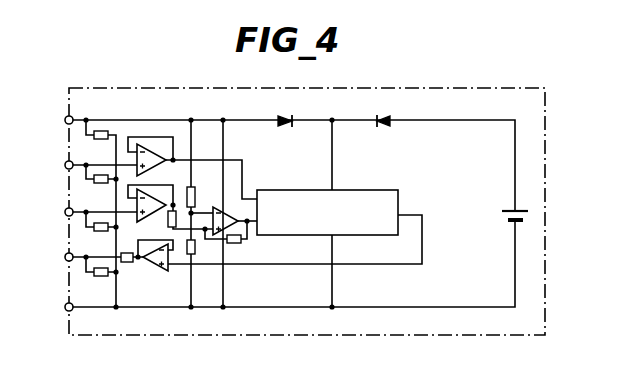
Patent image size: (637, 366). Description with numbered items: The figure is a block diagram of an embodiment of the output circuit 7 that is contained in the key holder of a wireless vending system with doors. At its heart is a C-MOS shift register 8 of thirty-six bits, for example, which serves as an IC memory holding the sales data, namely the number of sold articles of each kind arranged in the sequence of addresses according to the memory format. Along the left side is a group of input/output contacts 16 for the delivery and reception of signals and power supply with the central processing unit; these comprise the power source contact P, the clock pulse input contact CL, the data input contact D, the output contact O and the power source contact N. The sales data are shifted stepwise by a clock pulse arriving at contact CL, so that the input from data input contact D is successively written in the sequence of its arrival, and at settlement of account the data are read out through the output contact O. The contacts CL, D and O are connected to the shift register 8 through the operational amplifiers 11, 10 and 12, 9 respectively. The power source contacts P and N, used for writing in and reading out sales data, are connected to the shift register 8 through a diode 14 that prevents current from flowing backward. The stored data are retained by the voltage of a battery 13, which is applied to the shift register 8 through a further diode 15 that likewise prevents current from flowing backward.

The output circuit 7 is at (478, 88).
The shift register 8 is at (298, 236).
The operational amplifier 9 is at (147, 268).
The operational amplifier 10 is at (152, 188).
The operational amplifier 11 is at (142, 146).
The operational amplifier 12 is at (228, 210).
The battery 13 is at (517, 222).
The diode 14 is at (294, 118).
The diode 15 is at (388, 121).
The group of input/output contacts 16 is at (48, 103).